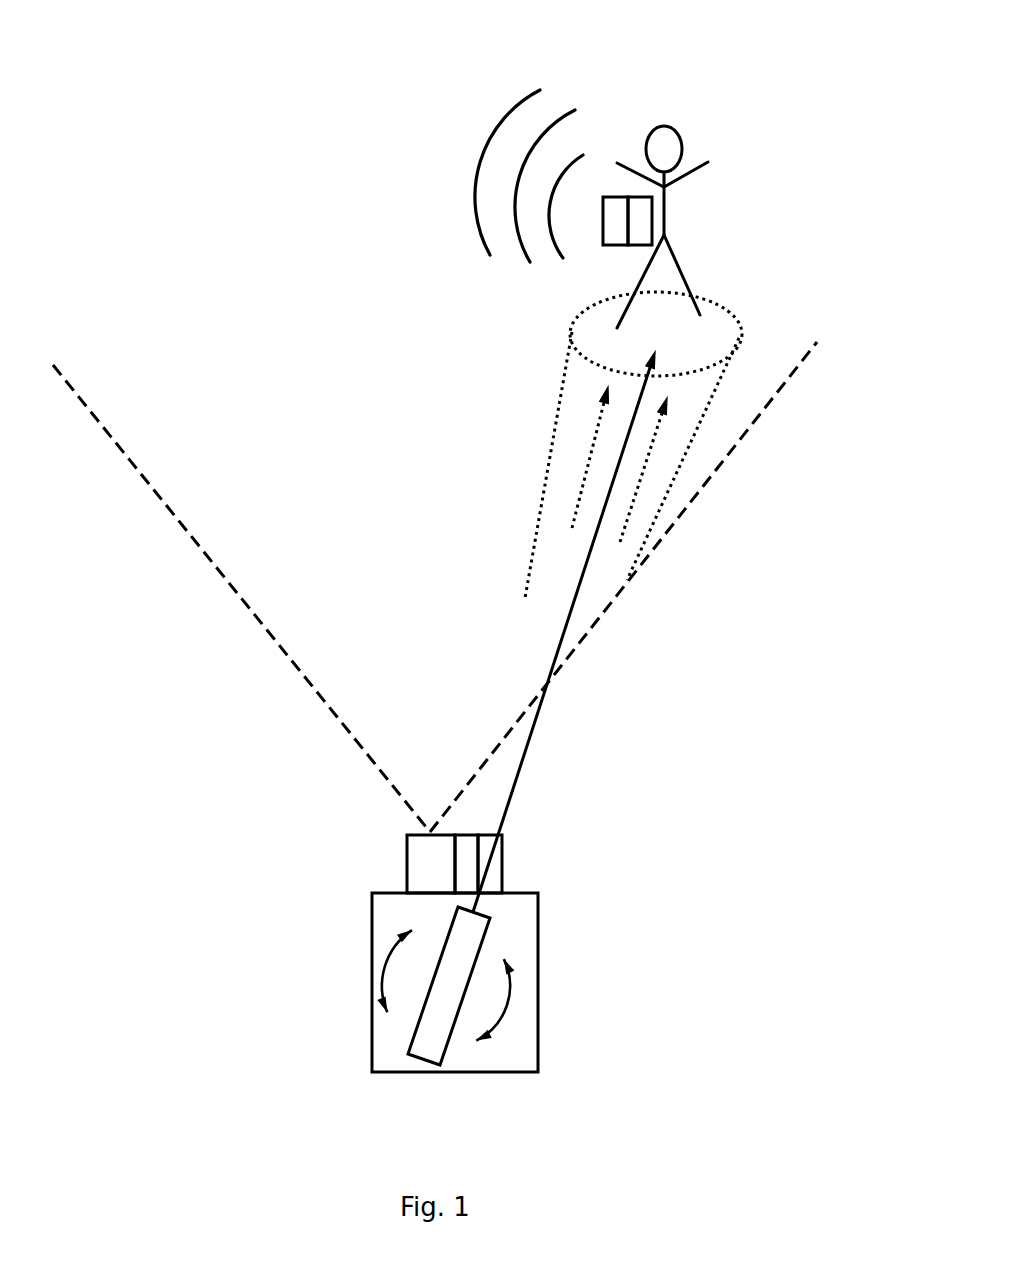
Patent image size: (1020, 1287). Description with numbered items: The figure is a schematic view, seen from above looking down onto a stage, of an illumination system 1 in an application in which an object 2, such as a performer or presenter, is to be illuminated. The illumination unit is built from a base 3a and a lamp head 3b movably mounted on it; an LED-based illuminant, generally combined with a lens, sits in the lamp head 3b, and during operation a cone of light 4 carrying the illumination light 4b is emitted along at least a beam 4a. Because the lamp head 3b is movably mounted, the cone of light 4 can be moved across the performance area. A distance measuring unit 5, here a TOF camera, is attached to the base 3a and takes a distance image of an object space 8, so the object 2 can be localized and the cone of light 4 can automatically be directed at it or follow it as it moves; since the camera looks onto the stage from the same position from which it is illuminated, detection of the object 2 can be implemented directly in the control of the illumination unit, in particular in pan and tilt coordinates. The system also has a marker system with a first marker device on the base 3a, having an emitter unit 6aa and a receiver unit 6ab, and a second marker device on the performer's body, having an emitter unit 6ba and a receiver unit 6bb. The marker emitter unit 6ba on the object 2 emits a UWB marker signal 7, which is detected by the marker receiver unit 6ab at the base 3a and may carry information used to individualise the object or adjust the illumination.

The illumination system 1 is at (463, 935).
The object 2 is at (600, 170).
The base 3a is at (388, 1037).
The lamp head 3b is at (447, 993).
The cone of light 4 is at (646, 602).
The beam 4a is at (562, 643).
The illumination light 4b is at (637, 495).
The distance measuring unit 5 is at (427, 865).
The emitter unit 6aa is at (460, 852).
The receiver unit 6ab is at (492, 880).
The marker emitter unit 6ba is at (602, 213).
The receiver unit 6bb is at (638, 222).
The marker signal 7 is at (513, 200).
The object space 8 is at (387, 684).